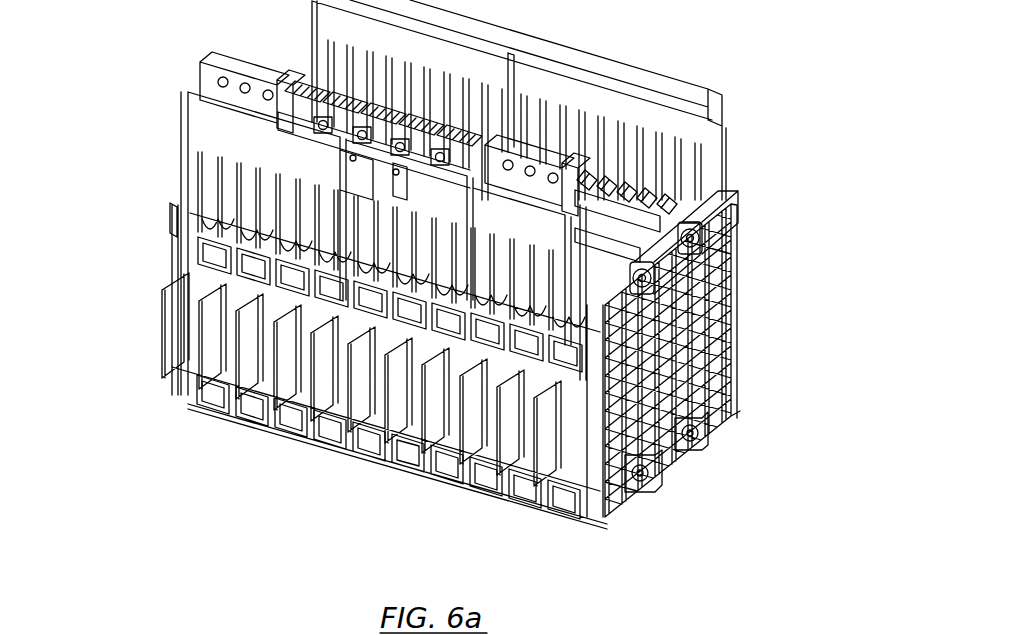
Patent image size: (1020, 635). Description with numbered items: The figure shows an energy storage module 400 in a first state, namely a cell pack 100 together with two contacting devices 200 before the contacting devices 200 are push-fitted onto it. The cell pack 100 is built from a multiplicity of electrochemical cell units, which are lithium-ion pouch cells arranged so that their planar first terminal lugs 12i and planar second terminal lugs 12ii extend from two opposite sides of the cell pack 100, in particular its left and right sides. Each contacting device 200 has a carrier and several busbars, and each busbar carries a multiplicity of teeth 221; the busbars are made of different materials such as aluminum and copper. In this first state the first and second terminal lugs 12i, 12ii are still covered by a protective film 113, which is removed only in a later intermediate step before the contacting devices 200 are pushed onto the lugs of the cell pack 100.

The contacting device 200 is at (163, 88).
The cell pack 100 is at (272, 450).
The energy storage module 400 is at (738, 513).
The teeth 221 is at (300, 242).
The protective film 113 is at (558, 407).
The first terminal lug 12i is at (533, 529).
The second terminal lug 12ii is at (763, 180).